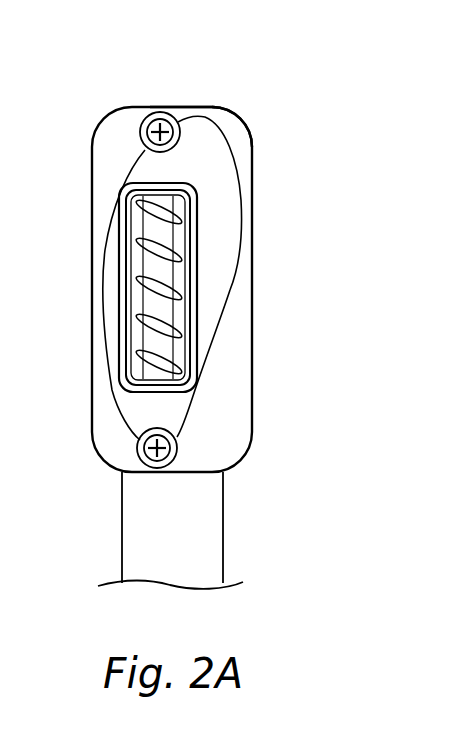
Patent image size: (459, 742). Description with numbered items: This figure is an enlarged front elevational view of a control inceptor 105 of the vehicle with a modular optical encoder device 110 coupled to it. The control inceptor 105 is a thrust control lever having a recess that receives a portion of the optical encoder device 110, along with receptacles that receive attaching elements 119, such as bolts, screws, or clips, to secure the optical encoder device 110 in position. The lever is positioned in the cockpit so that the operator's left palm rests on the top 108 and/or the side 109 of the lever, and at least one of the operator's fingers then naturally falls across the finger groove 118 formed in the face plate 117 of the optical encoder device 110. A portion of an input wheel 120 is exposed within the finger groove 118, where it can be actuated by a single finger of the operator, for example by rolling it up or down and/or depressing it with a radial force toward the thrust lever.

The control inceptor 105 is at (263, 484).
The top 108 is at (208, 107).
The side 109 is at (252, 142).
The modular optical encoder device 110 is at (240, 318).
The face plate 117 is at (215, 388).
The finger groove 118 is at (222, 190).
The attaching elements 119 is at (148, 122).
The input wheel 120 is at (160, 270).